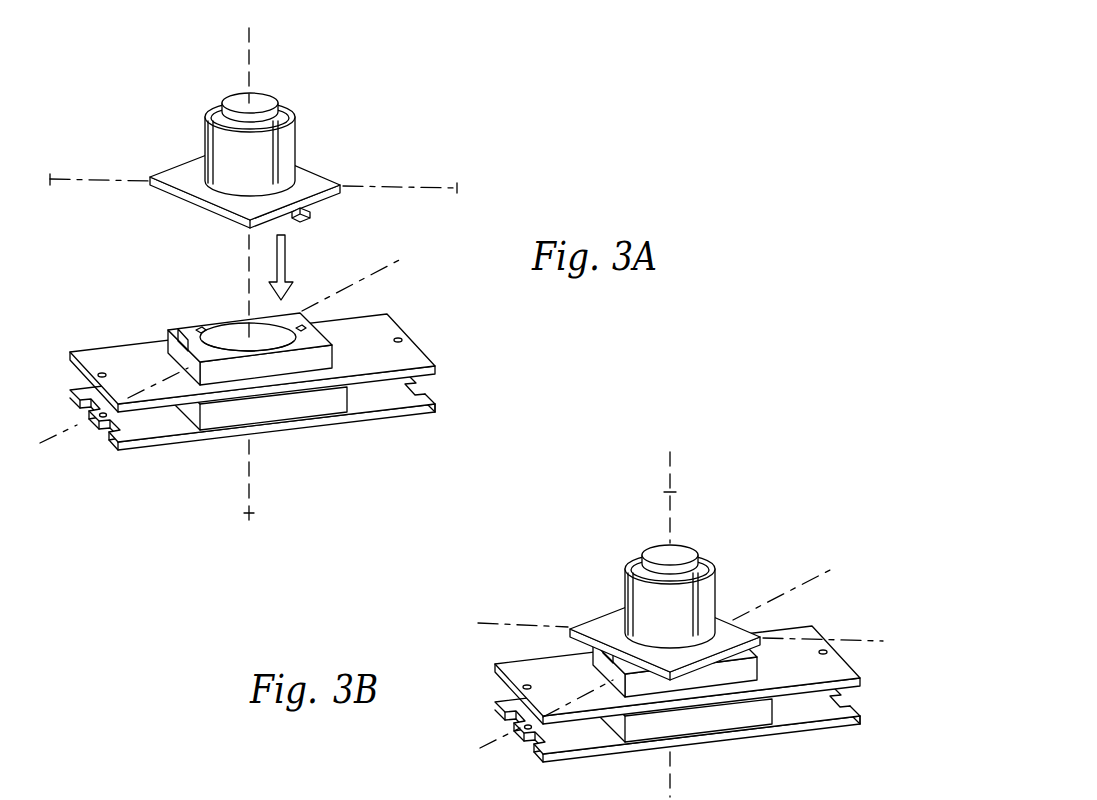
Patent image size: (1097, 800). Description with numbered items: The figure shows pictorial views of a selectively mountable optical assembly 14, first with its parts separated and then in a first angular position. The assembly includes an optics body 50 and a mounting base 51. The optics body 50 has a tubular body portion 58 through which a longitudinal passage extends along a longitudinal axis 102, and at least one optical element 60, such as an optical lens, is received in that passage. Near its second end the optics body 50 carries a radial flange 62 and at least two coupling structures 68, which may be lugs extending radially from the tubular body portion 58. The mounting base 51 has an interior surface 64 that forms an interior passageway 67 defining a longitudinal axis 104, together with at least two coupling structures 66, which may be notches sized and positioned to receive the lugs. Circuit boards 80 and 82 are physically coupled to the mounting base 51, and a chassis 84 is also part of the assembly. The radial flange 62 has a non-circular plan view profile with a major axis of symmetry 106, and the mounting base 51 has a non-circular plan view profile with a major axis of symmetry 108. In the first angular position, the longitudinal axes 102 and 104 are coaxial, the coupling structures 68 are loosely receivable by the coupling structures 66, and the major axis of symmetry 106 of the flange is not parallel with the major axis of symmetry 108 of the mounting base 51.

In FIG. 3A, the selectively mountable optical assembly 14 is at (294, 263).
In FIG. 3B, the selectively mountable optical assembly 14 is at (688, 587).
In FIG. 3A, the optics body 50 is at (242, 149).
In FIG. 3A, the mounting base 51 is at (294, 362).
In FIG. 3A, the tubular body portion 58 is at (297, 128).
In FIG. 3B, the tubular body portion 58 is at (691, 595).
In FIG. 3A, the optical element 60 is at (258, 98).
In FIG. 3B, the optical element 60 is at (685, 531).
In FIG. 3A, the radial flange 62 is at (312, 183).
In FIG. 3A, the interior surface 64 is at (274, 304).
In FIG. 3A, the coupling structures 66 is at (283, 309).
In FIG. 3A, the interior passageway 67 is at (231, 333).
In FIG. 3A, the coupling structures 68 is at (312, 216).
In FIG. 3A, the circuit board 80 is at (440, 368).
In FIG. 3A, the circuit board 82 is at (438, 408).
In FIG. 3A, the chassis 84 is at (331, 412).
In FIG. 3A, the longitudinal axis 102 is at (248, 30).
In FIG. 3B, the longitudinal axis 102 is at (668, 455).
In FIG. 3A, the longitudinal axis 104 is at (247, 513).
In FIG. 3B, the longitudinal axis 104 is at (668, 492).
In FIG. 3A, the major axis of symmetry 106 is at (440, 184).
In FIG. 3B, the major axis of symmetry 106 is at (857, 637).
In FIG. 3A, the major axis of symmetry 108 is at (392, 264).
In FIG. 3B, the major axis of symmetry 108 is at (812, 578).